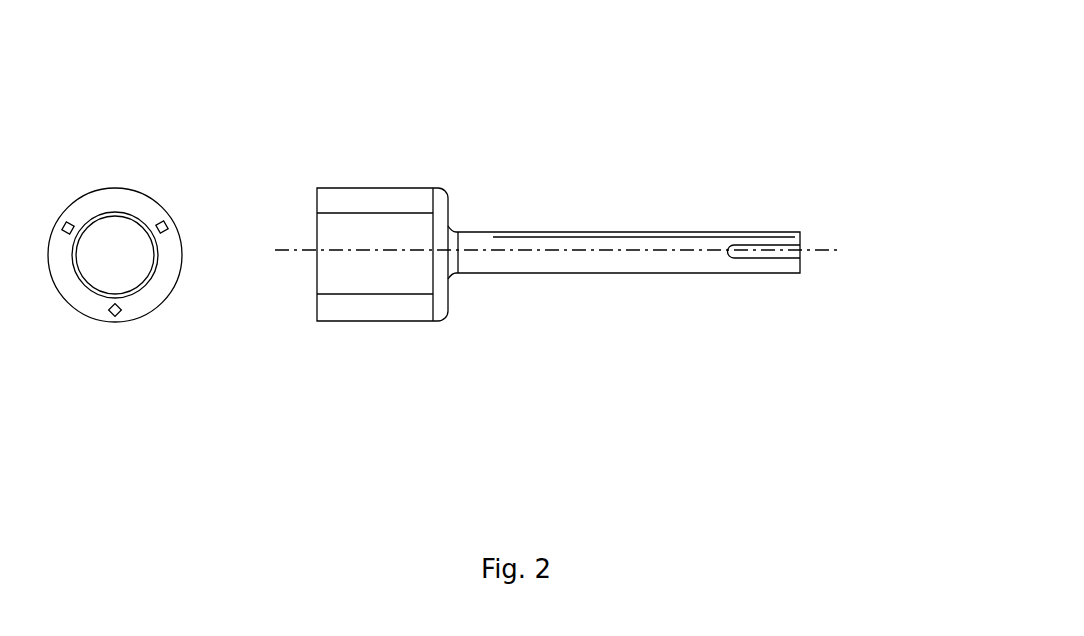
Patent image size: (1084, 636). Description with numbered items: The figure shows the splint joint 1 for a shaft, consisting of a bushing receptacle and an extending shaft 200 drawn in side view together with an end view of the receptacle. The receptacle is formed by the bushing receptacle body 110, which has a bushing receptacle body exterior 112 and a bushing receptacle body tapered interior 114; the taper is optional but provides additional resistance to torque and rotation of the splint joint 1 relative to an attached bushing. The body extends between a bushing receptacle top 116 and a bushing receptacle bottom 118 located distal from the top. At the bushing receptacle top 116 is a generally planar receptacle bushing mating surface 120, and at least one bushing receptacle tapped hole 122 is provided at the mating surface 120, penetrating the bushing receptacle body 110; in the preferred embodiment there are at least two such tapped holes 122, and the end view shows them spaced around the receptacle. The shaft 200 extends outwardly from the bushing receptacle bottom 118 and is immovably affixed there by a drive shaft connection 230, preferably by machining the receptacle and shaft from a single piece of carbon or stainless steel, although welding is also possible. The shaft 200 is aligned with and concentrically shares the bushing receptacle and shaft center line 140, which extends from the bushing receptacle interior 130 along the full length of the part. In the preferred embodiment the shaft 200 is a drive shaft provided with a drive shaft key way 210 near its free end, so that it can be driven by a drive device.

The splint joint 1 is at (527, 88).
The bushing receptacle body 110 is at (362, 207).
The bushing receptacle body exterior 112 is at (370, 307).
The bushing receptacle body tapered interior 114 is at (410, 288).
The bushing receptacle top 116 is at (333, 190).
The bushing receptacle bottom 118 is at (443, 300).
The receptacle bushing mating surface 120 is at (150, 205).
The bushing receptacle tapped hole 122 is at (73, 235).
The bushing receptacle interior 130 is at (343, 275).
The bushing receptacle and shaft center line 140 is at (112, 250).
The shaft 200 is at (652, 250).
The drive shaft key way 210 is at (683, 228).
The drive shaft connection 230 is at (450, 228).